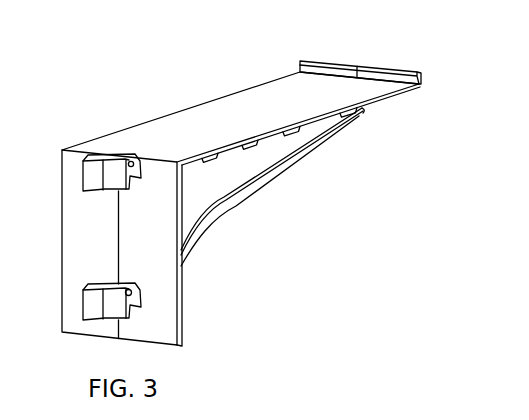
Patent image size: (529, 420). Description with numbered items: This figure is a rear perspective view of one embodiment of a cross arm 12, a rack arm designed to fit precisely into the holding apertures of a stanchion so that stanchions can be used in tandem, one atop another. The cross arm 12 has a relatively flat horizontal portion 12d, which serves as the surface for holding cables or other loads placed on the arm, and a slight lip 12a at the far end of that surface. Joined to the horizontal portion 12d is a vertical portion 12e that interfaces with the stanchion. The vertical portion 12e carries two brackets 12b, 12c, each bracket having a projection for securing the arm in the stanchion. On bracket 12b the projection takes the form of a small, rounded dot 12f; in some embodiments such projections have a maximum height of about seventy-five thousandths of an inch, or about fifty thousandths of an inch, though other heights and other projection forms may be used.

The cross arm 12 is at (253, 84).
The lip 12a is at (382, 66).
The bracket 12b is at (88, 182).
The bracket 12c is at (87, 305).
The horizontal portion 12d is at (305, 117).
The vertical portion 12e is at (182, 278).
The dot 12f is at (136, 160).